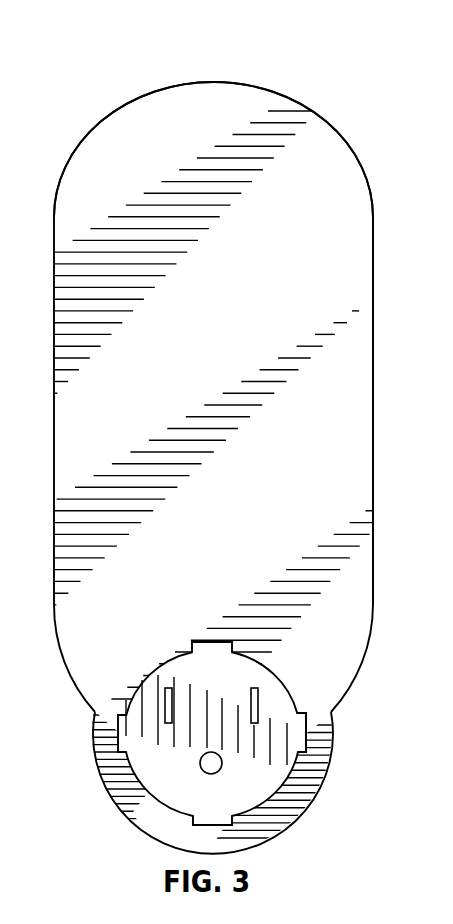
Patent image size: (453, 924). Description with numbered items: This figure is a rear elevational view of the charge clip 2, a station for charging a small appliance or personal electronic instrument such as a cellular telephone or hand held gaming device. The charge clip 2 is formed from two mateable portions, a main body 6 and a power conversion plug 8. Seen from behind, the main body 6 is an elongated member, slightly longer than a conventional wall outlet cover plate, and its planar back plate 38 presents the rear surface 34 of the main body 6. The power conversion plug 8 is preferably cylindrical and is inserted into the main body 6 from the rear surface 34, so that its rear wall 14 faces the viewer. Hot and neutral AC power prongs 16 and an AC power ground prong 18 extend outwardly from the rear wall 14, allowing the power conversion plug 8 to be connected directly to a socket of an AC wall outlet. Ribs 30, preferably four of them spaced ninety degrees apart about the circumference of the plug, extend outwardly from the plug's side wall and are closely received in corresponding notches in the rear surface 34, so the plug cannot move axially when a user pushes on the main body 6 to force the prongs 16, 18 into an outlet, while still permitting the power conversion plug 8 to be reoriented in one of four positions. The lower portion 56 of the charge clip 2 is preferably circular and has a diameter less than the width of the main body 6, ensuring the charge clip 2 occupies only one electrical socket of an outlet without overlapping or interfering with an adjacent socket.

The charge clip 2 is at (57, 64).
The main body 6 is at (397, 289).
The back plate 38 is at (345, 145).
The rear surface 34 is at (355, 583).
The power conversion plug 8 is at (152, 783).
The rear wall 14 is at (168, 795).
The hot and neutral AC power prongs 16 is at (262, 697).
The AC power ground prong 18 is at (225, 765).
The ribs 30 is at (310, 725).
The lower portion 56 is at (297, 822).